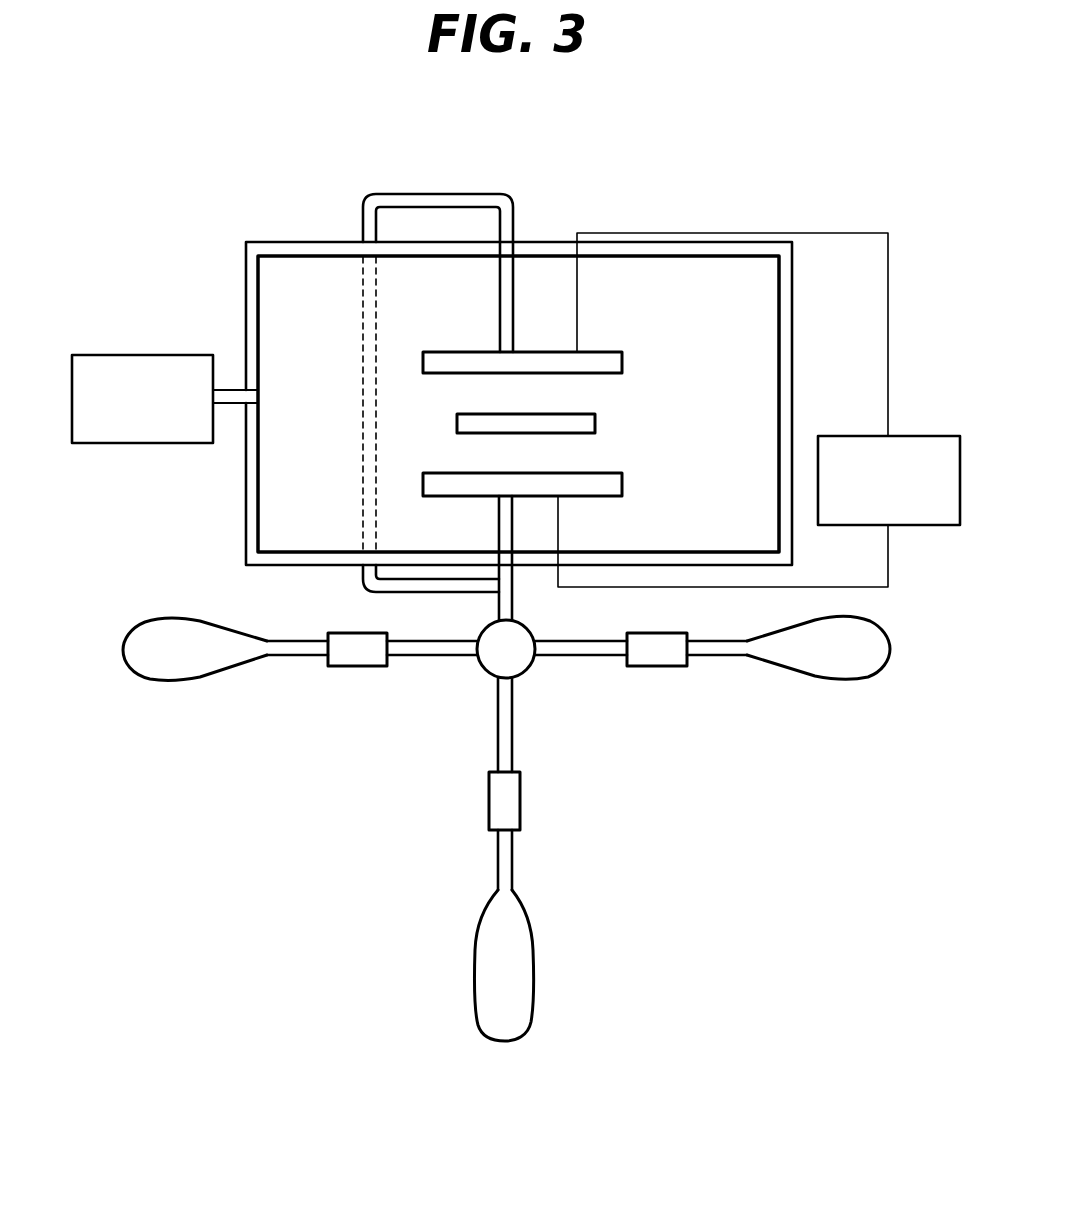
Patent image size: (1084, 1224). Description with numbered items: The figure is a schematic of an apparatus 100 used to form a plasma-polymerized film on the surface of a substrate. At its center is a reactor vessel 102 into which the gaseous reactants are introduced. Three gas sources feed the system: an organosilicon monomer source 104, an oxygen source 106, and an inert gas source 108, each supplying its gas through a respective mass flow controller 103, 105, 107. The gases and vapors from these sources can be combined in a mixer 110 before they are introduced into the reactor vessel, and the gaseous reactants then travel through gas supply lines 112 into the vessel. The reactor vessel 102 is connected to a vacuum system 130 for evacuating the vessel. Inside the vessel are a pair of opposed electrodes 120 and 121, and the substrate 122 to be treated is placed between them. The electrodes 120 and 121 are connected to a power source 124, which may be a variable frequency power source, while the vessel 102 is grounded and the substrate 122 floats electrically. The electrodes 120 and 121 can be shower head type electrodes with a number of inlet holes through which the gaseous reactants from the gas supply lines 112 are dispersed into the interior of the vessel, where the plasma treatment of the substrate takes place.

The apparatus 100 is at (528, 152).
The reactor vessel 102 is at (790, 320).
The mass flow controller 103 is at (672, 660).
The organosilicon monomer source 104 is at (858, 668).
The mass flow controller 105 is at (518, 800).
The oxygen source 106 is at (520, 975).
The mass flow controller 107 is at (350, 657).
The inert gas source 108 is at (172, 672).
The mixer 110 is at (488, 660).
The gas supply lines 112 is at (402, 193).
The electrode 120 is at (610, 352).
The electrode 121 is at (613, 487).
The substrate 122 is at (583, 426).
The power source 124 is at (905, 436).
The vacuum system 130 is at (112, 355).